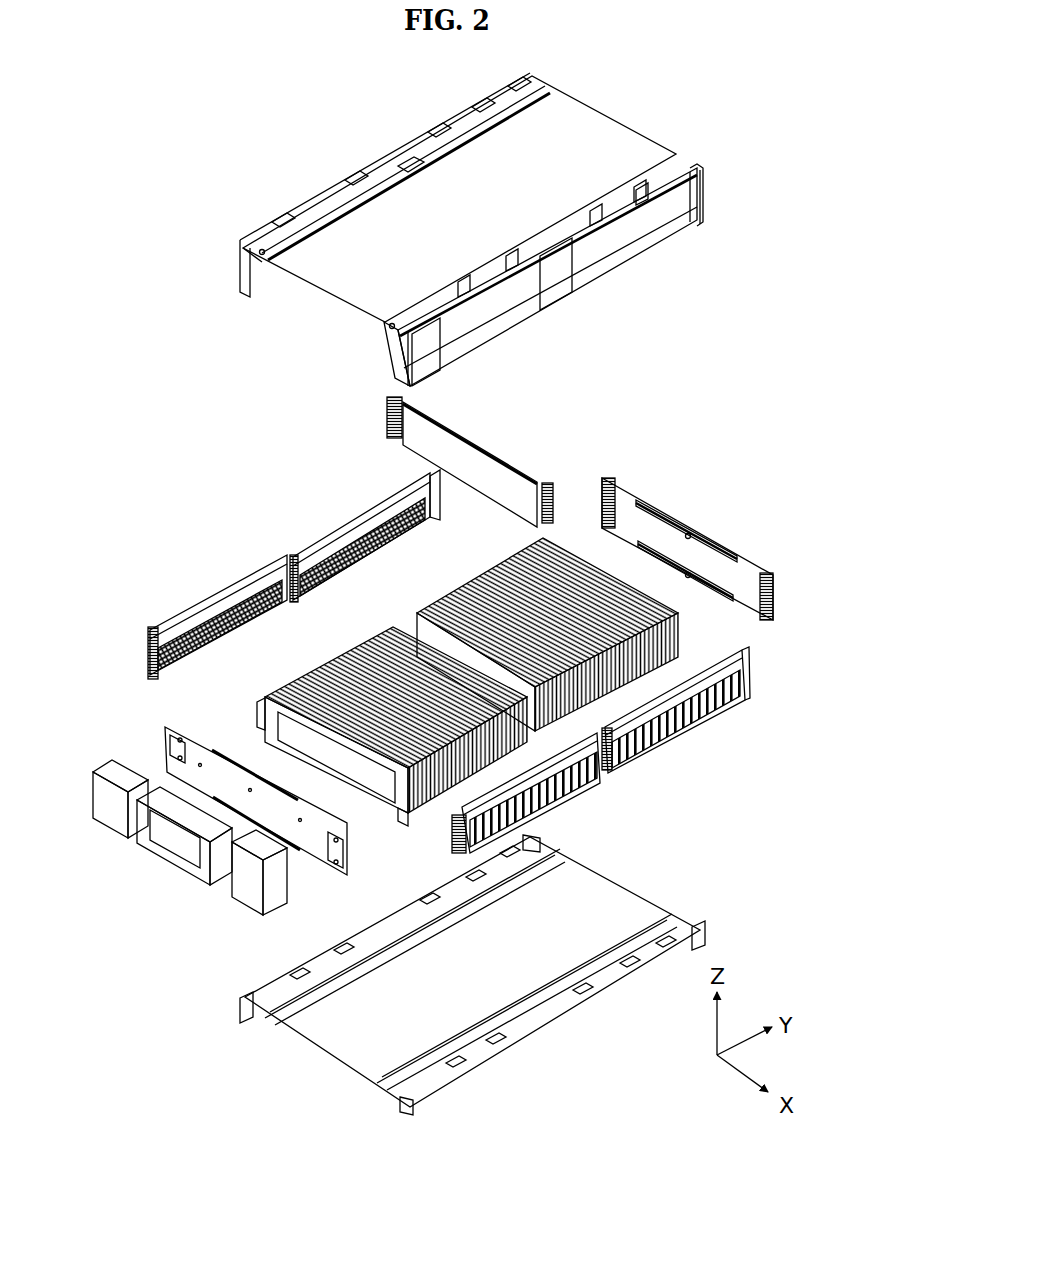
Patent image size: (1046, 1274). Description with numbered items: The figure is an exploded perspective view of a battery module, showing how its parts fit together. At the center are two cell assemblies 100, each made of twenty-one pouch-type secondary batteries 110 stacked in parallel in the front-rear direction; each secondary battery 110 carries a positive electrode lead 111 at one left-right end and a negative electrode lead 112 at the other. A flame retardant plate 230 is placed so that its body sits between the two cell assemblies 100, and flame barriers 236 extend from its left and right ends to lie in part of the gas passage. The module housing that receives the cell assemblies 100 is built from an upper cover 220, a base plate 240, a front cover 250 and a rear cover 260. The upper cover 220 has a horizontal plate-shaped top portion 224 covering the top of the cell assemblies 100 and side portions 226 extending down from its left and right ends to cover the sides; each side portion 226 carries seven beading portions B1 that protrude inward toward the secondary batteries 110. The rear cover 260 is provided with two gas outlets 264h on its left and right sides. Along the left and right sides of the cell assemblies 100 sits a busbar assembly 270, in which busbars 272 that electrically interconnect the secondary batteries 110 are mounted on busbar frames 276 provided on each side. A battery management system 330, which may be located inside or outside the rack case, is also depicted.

The cell assembly 100 is at (370, 726).
The secondary battery 110 is at (324, 752).
The positive electrode lead 111 is at (258, 714).
The negative electrode lead 112 is at (406, 817).
The upper cover 220 is at (497, 229).
The top portion 224 is at (493, 167).
The side portion 226 is at (360, 172).
The flame retardant plate 230 is at (455, 459).
The flame barrier 236 is at (386, 414).
The base plate 240 is at (472, 975).
The front cover 250 is at (230, 788).
The rear cover 260 is at (701, 198).
The gas outlet 264h is at (608, 530).
The busbar assembly 270 is at (217, 606).
The busbar 272 is at (728, 707).
The busbar frame 276 is at (676, 721).
The battery management system 330 is at (190, 838).
The beading portion B1 is at (643, 207).